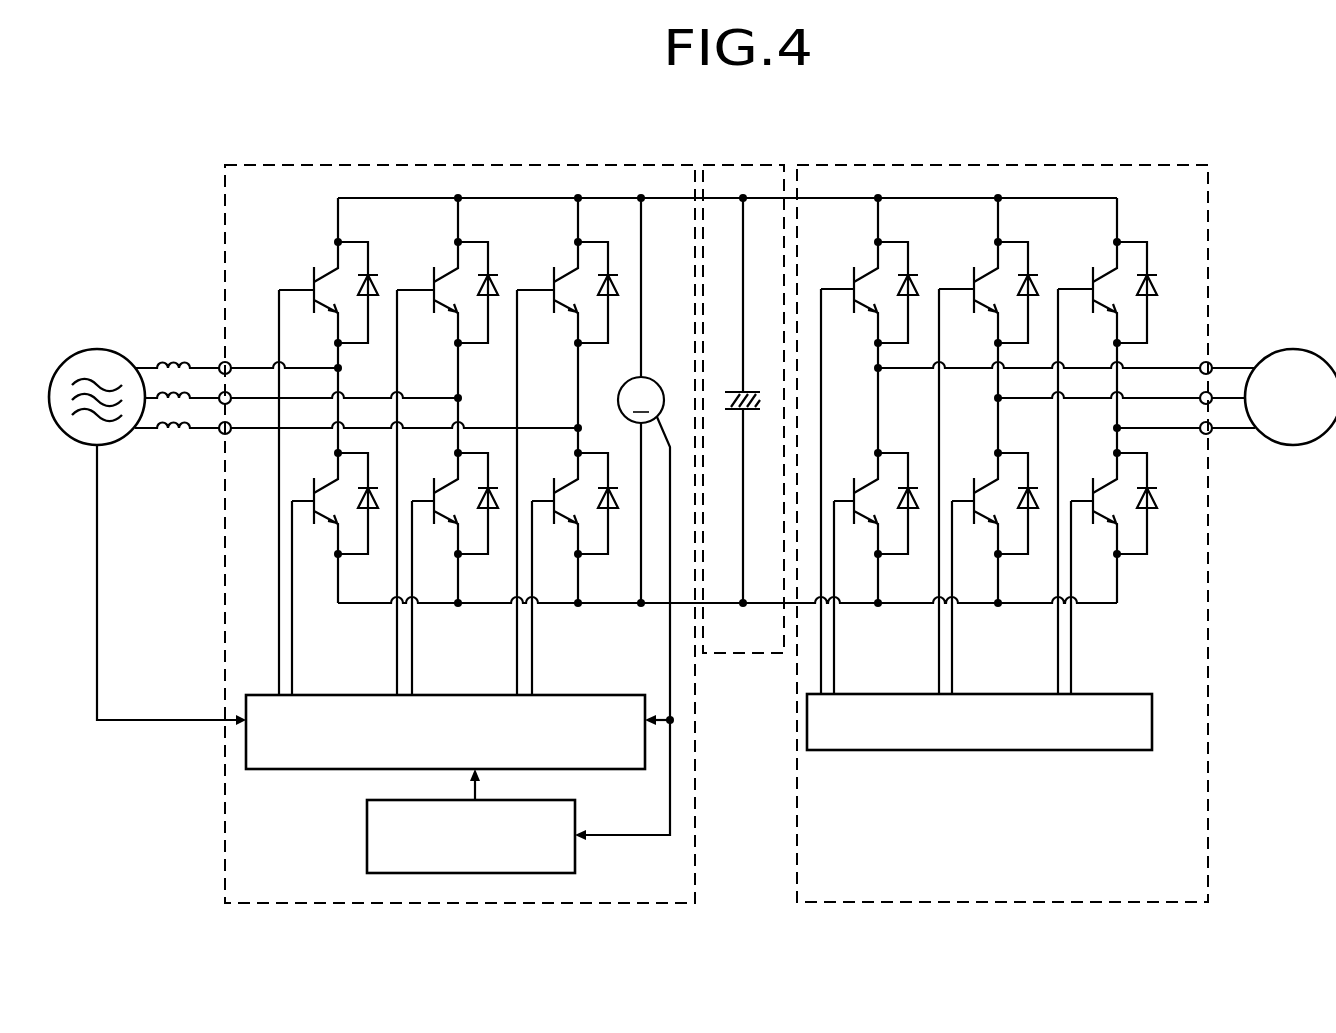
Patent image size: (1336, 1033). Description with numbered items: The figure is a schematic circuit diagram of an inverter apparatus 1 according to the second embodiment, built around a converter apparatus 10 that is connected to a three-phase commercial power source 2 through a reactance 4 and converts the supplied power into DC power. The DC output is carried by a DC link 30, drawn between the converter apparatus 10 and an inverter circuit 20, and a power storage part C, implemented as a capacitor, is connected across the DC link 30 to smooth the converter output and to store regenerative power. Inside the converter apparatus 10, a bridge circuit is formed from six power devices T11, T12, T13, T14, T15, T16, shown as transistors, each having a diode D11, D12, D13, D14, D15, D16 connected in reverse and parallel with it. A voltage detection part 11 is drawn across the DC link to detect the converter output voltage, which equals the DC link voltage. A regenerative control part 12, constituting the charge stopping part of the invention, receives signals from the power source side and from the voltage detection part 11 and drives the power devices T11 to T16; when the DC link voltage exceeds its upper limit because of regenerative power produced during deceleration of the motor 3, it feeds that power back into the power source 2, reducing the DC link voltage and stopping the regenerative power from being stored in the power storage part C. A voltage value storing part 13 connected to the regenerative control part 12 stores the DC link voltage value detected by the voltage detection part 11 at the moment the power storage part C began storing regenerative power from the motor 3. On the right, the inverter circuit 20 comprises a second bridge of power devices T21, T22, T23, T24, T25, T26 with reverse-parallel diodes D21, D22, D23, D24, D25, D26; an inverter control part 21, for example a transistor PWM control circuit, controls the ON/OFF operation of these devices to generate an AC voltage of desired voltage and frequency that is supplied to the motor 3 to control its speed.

The inverter apparatus 1 is at (102, 124).
The three-phase commercial power source 2 is at (99, 349).
The motor 3 is at (1300, 351).
The reactance 4 is at (182, 350).
The converter apparatus 10 is at (300, 165).
The voltage detection part 11 is at (661, 376).
The regenerative control part 12 is at (600, 695).
The voltage value storing part 13 is at (367, 833).
The inverter circuit 20 is at (930, 165).
The inverter control part 21 is at (1035, 752).
The DC link 30 is at (745, 165).
The power storage part C is at (747, 400).
The power device T11 is at (312, 277).
The power device T12 is at (312, 526).
The power device T13 is at (432, 277).
The power device T14 is at (432, 526).
The power device T15 is at (552, 277).
The power device T16 is at (552, 526).
The diode D11 is at (373, 271).
The diode D12 is at (378, 512).
The diode D13 is at (493, 271).
The diode D14 is at (498, 512).
The diode D15 is at (613, 271).
The diode D16 is at (618, 512).
The power device T21 is at (852, 276).
The power device T22 is at (852, 526).
The power device T23 is at (972, 276).
The power device T24 is at (972, 526).
The power device T25 is at (1091, 276).
The power device T26 is at (1091, 526).
The diode D21 is at (913, 271).
The diode D22 is at (910, 482).
The diode D23 is at (1033, 271).
The diode D24 is at (1030, 482).
The diode D25 is at (1152, 271).
The diode D26 is at (1158, 497).